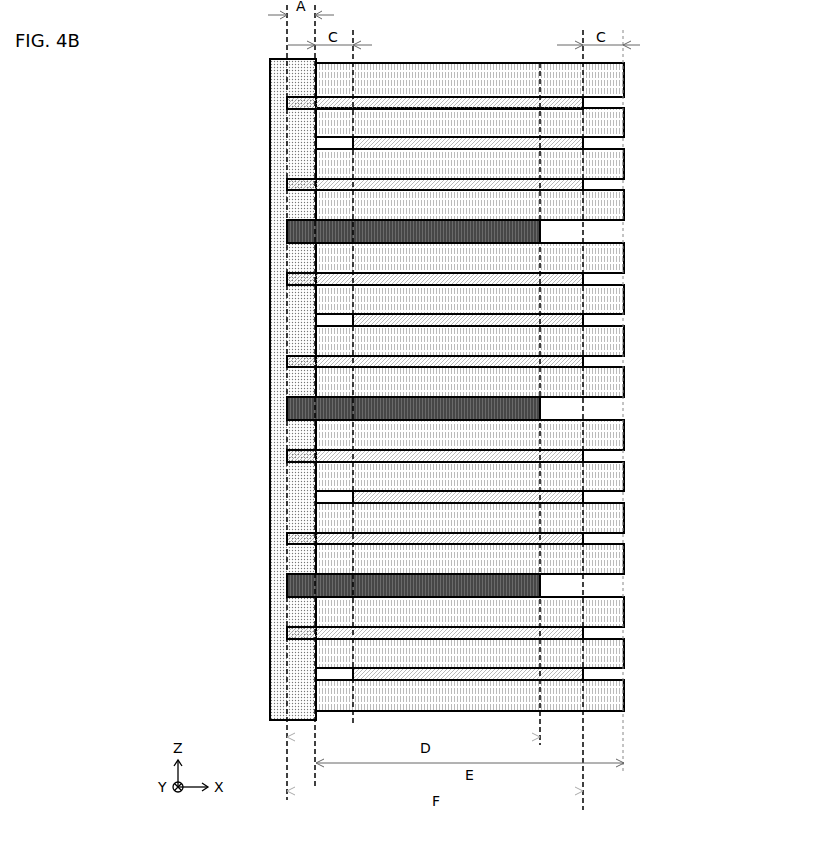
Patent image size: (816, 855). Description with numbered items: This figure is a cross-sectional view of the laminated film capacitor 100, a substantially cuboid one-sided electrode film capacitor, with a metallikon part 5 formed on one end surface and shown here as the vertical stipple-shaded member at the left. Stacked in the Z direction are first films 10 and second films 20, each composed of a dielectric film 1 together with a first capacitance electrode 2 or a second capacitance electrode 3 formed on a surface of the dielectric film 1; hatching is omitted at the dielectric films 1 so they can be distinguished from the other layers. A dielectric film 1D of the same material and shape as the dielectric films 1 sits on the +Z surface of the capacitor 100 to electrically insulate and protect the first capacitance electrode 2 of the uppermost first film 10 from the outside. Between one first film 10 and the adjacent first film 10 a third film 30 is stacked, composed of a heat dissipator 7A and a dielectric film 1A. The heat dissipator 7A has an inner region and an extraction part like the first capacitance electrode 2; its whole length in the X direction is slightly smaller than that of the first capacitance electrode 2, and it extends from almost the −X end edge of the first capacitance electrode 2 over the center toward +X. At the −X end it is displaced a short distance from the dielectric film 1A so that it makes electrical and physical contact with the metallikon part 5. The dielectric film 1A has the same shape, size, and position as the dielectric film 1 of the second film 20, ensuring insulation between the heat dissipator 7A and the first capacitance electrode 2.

The laminated film capacitor 100 is at (696, 19).
The dielectric film 1D is at (624, 78).
The dielectric film 1 is at (292, 119).
The first capacitance electrode 2 is at (289, 101).
The second capacitance electrode 3 is at (572, 143).
The first film 10 is at (389, 354).
The second film 20 is at (538, 399).
The third film 30 is at (403, 418).
The heat dissipator 7A is at (296, 225).
The dielectric film 1A is at (320, 258).
The metallikon part 5 is at (272, 720).